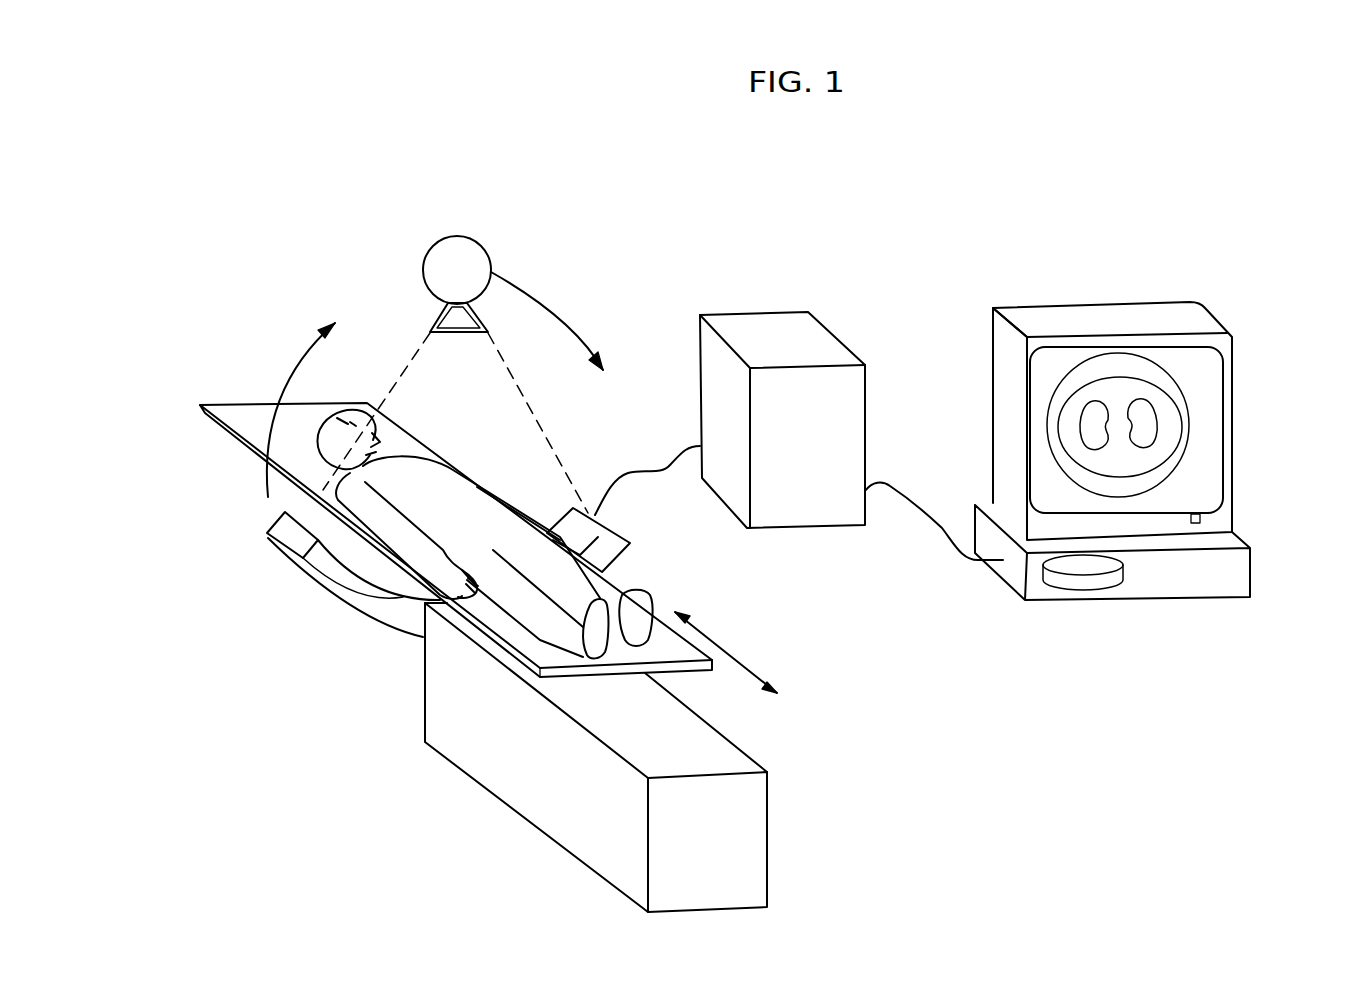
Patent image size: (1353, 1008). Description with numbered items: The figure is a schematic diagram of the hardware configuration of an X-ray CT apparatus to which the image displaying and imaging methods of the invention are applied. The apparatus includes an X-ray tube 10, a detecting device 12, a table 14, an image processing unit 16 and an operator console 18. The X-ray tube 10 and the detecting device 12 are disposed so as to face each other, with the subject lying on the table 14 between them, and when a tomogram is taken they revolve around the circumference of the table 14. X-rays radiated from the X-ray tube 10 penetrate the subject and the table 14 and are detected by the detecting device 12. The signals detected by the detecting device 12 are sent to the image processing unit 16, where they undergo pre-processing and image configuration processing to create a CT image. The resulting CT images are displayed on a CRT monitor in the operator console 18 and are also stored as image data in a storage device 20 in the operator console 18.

The X-ray tube 10 is at (430, 252).
The detecting device 12 is at (268, 540).
The table 14 is at (768, 805).
The image processing unit 16 is at (700, 343).
The operator console 18 is at (1000, 337).
The storage device 20 is at (1048, 588).